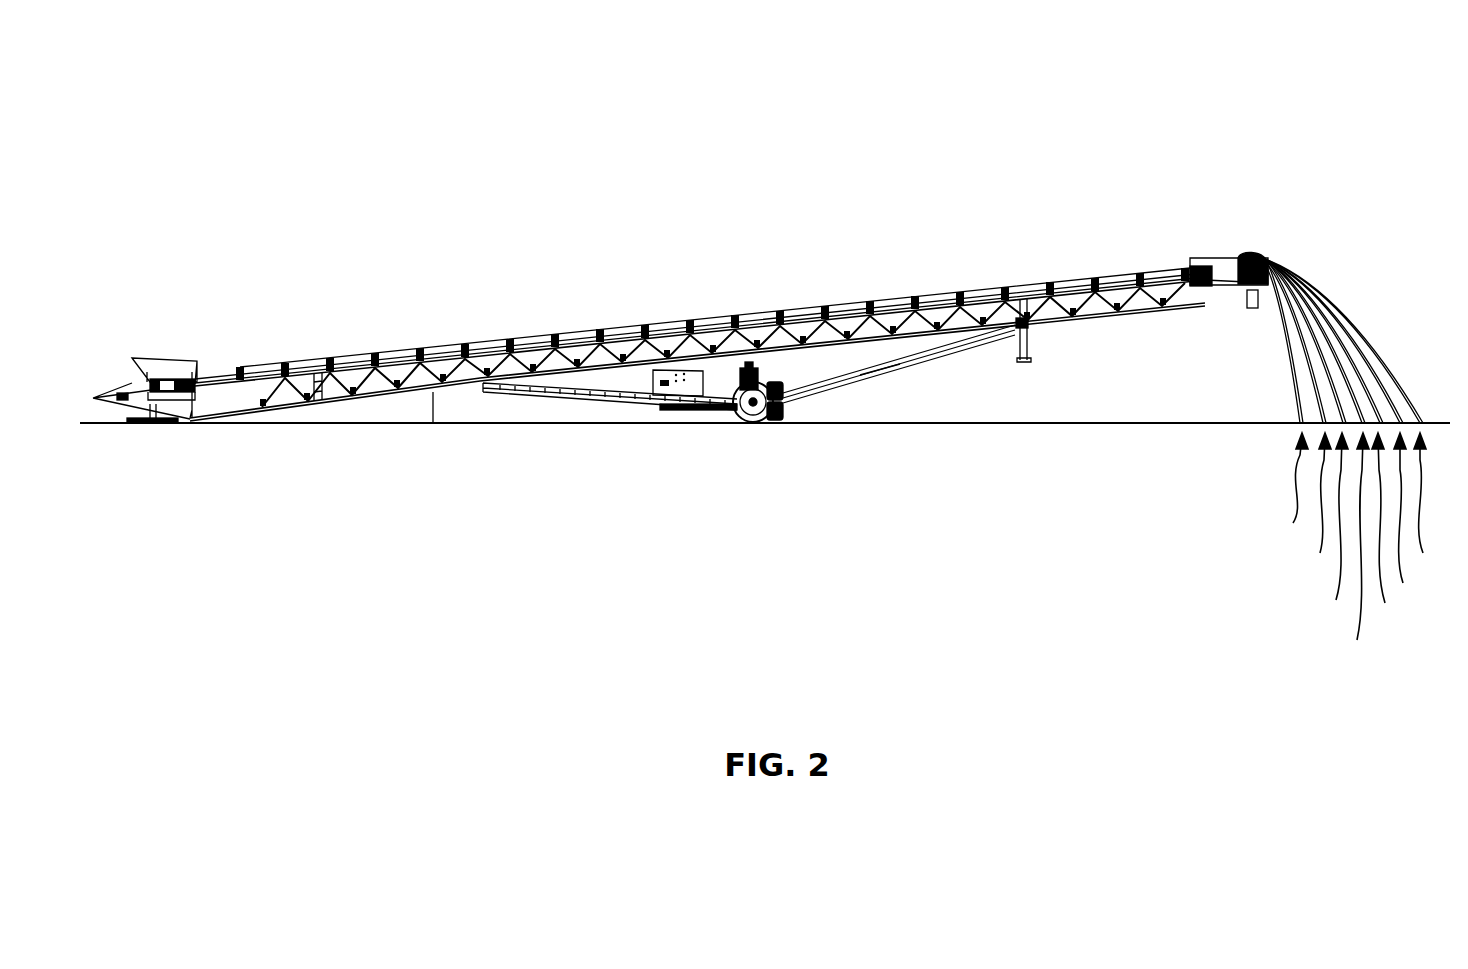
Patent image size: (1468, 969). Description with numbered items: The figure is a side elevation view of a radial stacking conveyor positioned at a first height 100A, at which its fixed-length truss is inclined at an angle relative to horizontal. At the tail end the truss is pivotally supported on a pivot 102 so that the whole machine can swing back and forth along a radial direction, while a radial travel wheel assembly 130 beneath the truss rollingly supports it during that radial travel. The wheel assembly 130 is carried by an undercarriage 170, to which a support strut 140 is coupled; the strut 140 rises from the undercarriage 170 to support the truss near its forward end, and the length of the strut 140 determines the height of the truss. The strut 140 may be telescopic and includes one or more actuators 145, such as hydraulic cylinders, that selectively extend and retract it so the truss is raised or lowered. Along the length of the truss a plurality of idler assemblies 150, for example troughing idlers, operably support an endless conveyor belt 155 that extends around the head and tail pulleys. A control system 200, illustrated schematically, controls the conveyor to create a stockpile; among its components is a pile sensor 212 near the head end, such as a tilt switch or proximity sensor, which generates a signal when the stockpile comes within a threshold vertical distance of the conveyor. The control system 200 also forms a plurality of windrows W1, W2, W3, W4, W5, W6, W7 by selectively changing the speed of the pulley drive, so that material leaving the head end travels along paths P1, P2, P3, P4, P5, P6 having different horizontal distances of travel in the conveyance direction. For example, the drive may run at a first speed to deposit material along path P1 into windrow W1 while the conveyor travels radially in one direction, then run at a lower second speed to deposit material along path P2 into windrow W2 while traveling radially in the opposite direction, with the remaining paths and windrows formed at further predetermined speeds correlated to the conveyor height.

The first height 100A is at (435, 214).
The pivot 102 is at (153, 426).
The radial travel wheel assembly 130 is at (736, 439).
The undercarriage 170 is at (758, 392).
The support strut 140 is at (940, 377).
The actuators 145 is at (880, 380).
The idler assemblies 150 is at (818, 302).
The endless conveyor belt 155 is at (706, 314).
The control system 200 is at (1080, 166).
The pile sensor 212 is at (1253, 309).
The path P1 is at (1340, 296).
The path P2 is at (1357, 327).
The path P3 is at (1353, 353).
The path P4 is at (1297, 403).
The path P5 is at (1313, 378).
The path P6 is at (1313, 350).
The windrow W1 is at (1434, 513).
The windrow W2 is at (1411, 523).
The windrow W3 is at (1390, 536).
The windrow W4 is at (1351, 556).
The windrow W5 is at (1330, 534).
The windrow W6 is at (1313, 513).
The windrow W7 is at (1288, 496).